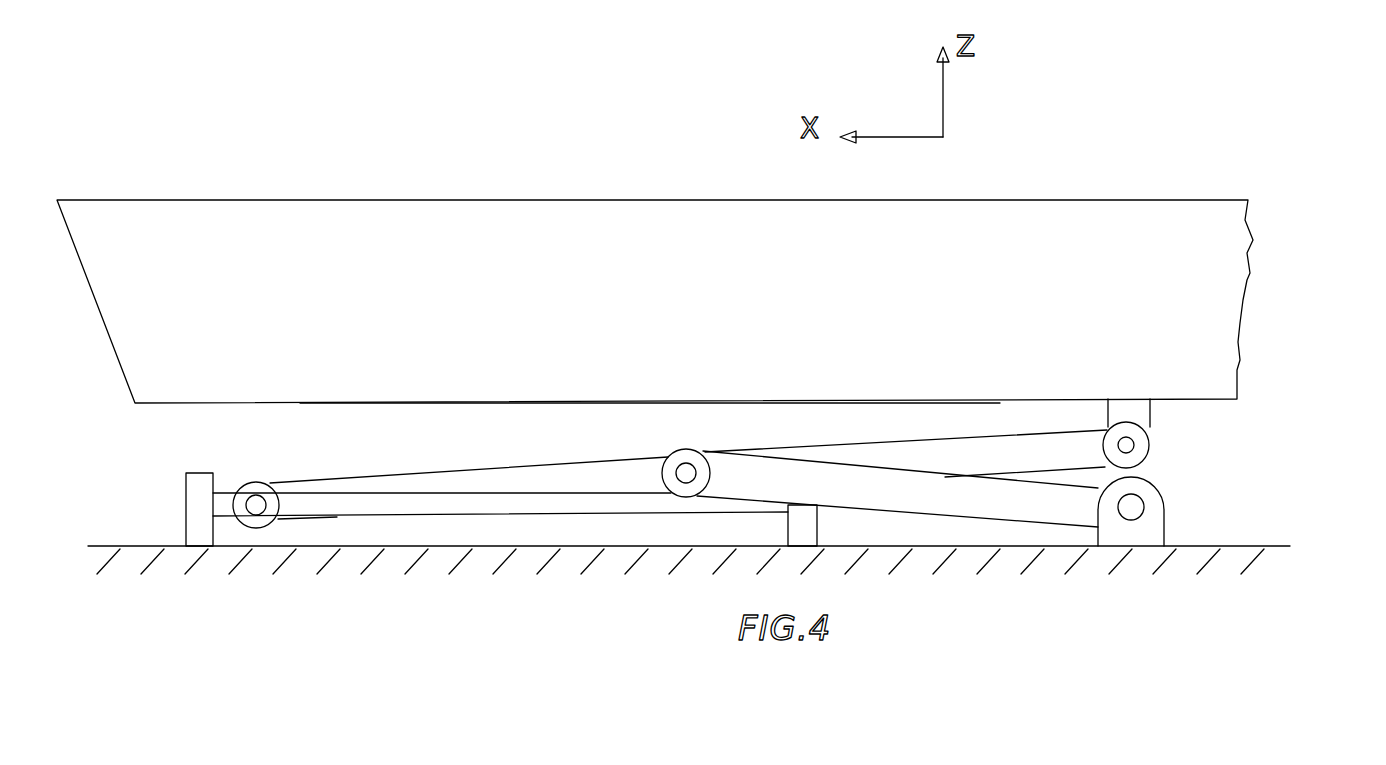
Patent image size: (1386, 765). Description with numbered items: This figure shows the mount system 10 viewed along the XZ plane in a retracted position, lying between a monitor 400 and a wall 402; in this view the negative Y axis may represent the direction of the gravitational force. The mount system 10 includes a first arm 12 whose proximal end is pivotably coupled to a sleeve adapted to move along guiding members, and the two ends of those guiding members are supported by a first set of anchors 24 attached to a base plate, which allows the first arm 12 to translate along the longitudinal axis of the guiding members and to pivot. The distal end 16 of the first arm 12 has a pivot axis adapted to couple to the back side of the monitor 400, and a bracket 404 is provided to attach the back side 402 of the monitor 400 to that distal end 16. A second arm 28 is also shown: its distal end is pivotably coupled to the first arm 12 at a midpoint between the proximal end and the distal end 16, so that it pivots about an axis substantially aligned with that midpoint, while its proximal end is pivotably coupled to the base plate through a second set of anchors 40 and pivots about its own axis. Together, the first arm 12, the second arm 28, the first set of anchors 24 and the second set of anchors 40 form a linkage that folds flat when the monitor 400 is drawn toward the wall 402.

The mount system 10 is at (1210, 455).
The first arm 12 is at (937, 460).
The distal end 16 is at (1140, 443).
The first set of anchors 24 is at (198, 533).
The second arm 28 is at (957, 503).
The second set of anchors 40 is at (1147, 525).
The monitor 400 is at (1065, 220).
The wall 402 is at (320, 407).
The bracket 404 is at (1138, 408).